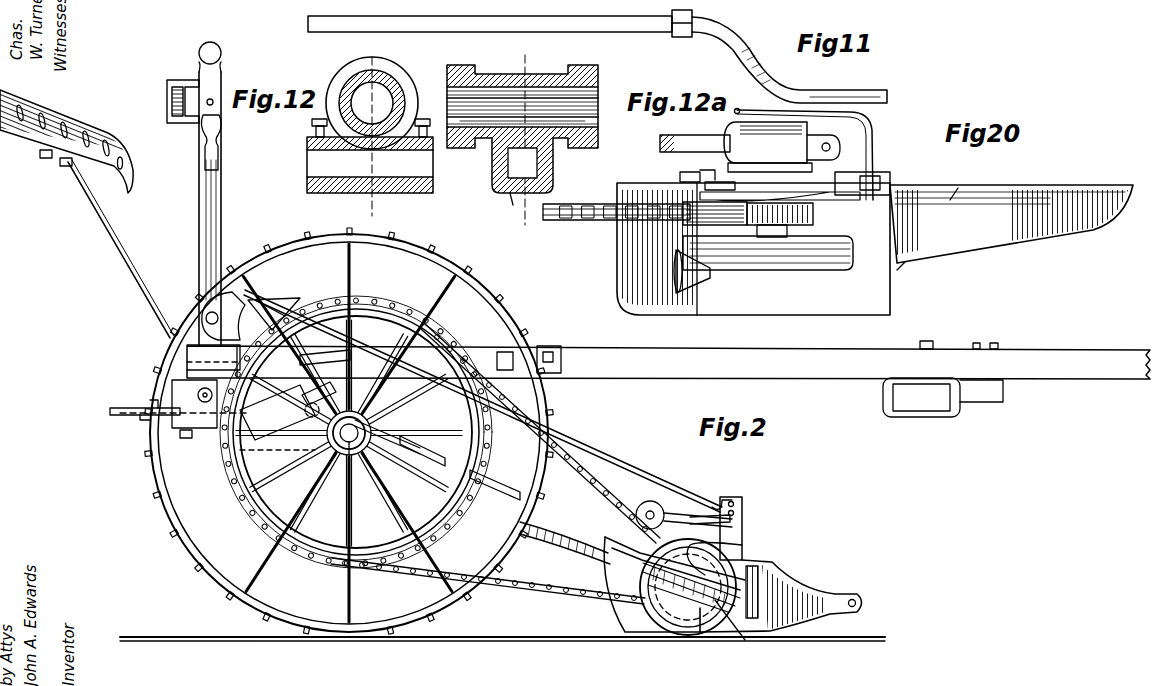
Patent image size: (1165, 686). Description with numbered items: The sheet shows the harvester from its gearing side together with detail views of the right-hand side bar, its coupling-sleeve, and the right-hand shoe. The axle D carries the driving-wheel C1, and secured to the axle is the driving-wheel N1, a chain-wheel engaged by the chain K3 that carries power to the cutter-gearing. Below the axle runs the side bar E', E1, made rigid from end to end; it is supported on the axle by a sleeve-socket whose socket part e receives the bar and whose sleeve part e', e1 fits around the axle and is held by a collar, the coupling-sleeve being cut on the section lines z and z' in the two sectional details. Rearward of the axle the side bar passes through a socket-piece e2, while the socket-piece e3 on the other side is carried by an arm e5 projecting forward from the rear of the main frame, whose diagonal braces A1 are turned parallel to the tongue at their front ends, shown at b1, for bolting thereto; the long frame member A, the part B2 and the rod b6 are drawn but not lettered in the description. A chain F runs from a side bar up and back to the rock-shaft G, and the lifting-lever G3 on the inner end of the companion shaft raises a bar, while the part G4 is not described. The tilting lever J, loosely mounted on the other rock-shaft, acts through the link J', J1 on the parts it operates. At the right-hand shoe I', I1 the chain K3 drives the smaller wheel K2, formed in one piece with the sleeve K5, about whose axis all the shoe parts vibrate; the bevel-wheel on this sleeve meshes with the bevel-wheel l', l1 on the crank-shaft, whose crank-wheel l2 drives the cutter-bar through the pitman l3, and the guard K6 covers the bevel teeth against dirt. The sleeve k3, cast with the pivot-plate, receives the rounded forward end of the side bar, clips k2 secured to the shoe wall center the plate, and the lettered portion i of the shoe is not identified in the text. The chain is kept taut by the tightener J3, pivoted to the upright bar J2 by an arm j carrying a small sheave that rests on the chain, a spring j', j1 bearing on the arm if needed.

In FIG. 2, the frame bar A is at (668, 374).
In FIG. 2, the diagonal brace A1 is at (475, 352).
In FIG. 2, the front end of brace b1 is at (548, 348).
In FIG. 2, the seat B2 is at (96, 140).
In FIG. 2, the seat support rod b6 is at (118, 248).
In FIG. 2, the driving-wheel C1 is at (500, 290).
In FIG. 2, the axle D is at (341, 458).
In FIG. 2, the socket part of sleeve-socket e is at (360, 475).
In FIG. 12, the socket part of sleeve-socket e is at (370, 166).
In FIG. 12A, the socket part of sleeve-socket e is at (506, 207).
In FIG. 2, the sleeve part of sleeve-socket e1 is at (342, 368).
In FIG. 12, the sleeve part of sleeve-socket e' is at (372, 103).
In FIG. 12A, the sleeve part of sleeve-socket e' is at (522, 122).
In FIG. 2, the rear socket-piece e2 is at (277, 417).
In FIG. 2, the socket-piece e3 is at (205, 440).
In FIG. 2, the arm e5 is at (309, 398).
In FIG. 2, the side bar E1 is at (568, 560).
In FIG. 11, the side bar E' is at (597, 56).
In FIG. 20, the side bar E' is at (680, 150).
In FIG. 2, the lifting chain F is at (440, 455).
In FIG. 2, the rock-shaft G is at (200, 318).
In FIG. 2, the lifting-lever G3 is at (221, 144).
In FIG. 2, the rod G4 is at (132, 408).
In FIG. 20, the shoe plate i is at (945, 207).
In FIG. 2, the shoe I1 is at (790, 605).
In FIG. 20, the shoe I' is at (1011, 210).
In FIG. 2, the arm j is at (700, 509).
In FIG. 20, the arm j is at (756, 198).
In FIG. 2, the spring j1 is at (702, 508).
In FIG. 20, the spring j' is at (804, 155).
In FIG. 2, the tilting lever J is at (220, 193).
In FIG. 2, the link J1 is at (590, 450).
In FIG. 20, the link J' is at (694, 197).
In FIG. 2, the upright bar J2 is at (744, 516).
In FIG. 20, the upright bar J2 is at (883, 174).
In FIG. 2, the chain tightener J3 is at (278, 305).
In FIG. 20, the chain tightener J3 is at (690, 226).
In FIG. 20, the clip k2 is at (680, 177).
In FIG. 20, the sleeve k3 is at (782, 147).
In FIG. 20, the smaller chain wheel K2 is at (790, 270).
In FIG. 2, the driving-chain K3 is at (535, 592).
In FIG. 20, the driving-chain K3 is at (600, 222).
In FIG. 20, the sleeve K5 is at (790, 238).
In FIG. 2, the shield K6 is at (745, 545).
In FIG. 20, the shield K6 is at (838, 268).
In FIG. 2, the bevel-wheel l1 is at (640, 560).
In FIG. 20, the bevel-wheel l' is at (677, 273).
In FIG. 2, the crank-wheel l2 is at (730, 633).
In FIG. 20, the crank-wheel l2 is at (909, 278).
In FIG. 2, the pitman l3 is at (760, 590).
In FIG. 2, the driving-wheel N1 is at (372, 312).
In FIG. 12A, the section line z is at (522, 139).
In FIG. 12, the section line z' is at (367, 136).